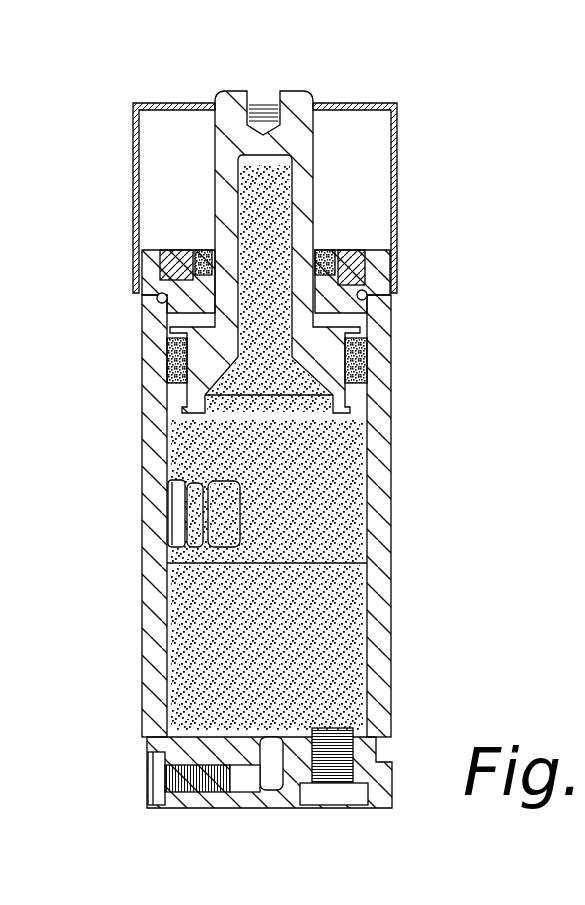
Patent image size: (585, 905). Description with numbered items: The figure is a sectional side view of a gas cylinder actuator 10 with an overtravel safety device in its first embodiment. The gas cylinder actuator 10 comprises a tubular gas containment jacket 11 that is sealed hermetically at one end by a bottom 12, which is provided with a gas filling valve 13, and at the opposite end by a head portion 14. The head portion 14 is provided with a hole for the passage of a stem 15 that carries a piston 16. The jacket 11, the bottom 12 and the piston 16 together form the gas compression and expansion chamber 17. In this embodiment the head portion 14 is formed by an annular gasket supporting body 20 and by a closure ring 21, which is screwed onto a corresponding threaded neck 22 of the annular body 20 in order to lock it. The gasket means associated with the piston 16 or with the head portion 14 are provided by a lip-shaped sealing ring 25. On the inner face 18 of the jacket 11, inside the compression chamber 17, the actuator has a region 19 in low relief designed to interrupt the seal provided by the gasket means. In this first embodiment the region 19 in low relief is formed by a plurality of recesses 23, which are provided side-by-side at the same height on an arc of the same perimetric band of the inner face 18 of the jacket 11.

The gas cylinder actuator 10 is at (436, 191).
The tubular gas containment jacket 11 is at (385, 440).
The bottom 12 is at (258, 806).
The gas filling valve 13 is at (150, 768).
The head portion 14 is at (154, 285).
The stem 15 is at (302, 175).
The piston 16 is at (323, 365).
The gas compression and expansion chamber 17 is at (310, 668).
The inner face of the jacket 18 is at (182, 665).
The region in low relief 19 is at (160, 508).
The annular gasket supporting body 20 is at (168, 318).
The closure ring 21 is at (356, 233).
The threaded neck 22 is at (177, 250).
The recesses 23 is at (243, 517).
The lip-shaped sealing ring 25 is at (163, 398).